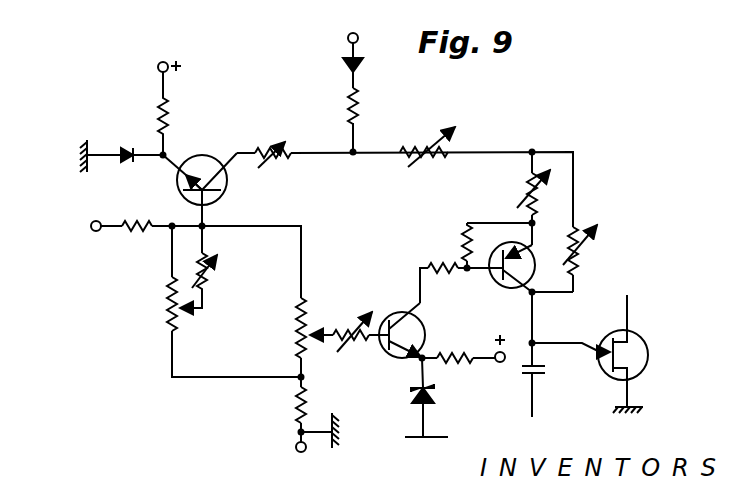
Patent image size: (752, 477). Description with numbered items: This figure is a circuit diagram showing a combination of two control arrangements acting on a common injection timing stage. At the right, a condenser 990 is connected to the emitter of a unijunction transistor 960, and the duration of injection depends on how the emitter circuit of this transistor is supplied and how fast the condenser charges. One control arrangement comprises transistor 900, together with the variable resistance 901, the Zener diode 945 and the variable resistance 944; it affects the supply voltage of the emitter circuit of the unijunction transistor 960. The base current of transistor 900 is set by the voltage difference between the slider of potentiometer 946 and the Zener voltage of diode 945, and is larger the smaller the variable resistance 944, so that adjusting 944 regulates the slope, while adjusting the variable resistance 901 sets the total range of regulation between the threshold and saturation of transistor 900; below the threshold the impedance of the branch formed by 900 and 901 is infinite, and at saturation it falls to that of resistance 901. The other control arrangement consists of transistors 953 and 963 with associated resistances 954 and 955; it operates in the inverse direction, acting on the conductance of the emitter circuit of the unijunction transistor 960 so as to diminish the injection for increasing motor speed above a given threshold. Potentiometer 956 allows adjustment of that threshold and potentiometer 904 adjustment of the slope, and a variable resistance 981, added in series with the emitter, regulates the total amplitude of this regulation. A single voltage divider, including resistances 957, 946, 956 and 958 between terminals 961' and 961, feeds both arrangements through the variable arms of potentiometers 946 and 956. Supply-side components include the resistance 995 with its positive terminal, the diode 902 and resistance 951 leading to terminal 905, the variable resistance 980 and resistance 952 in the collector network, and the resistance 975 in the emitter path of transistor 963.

The transistor 900 is at (228, 190).
The variable resistance 901 is at (273, 148).
The diode 902 is at (344, 65).
The potentiometer 904 is at (346, 329).
The terminal 905 is at (373, 42).
The variable resistance 944 is at (207, 290).
The diode 945 is at (128, 147).
The potentiometer 946 is at (166, 305).
The resistor 951 is at (350, 106).
The variable resistor 952 is at (584, 258).
The transistor 953 is at (510, 279).
The resistor 954 is at (432, 265).
The transistor 955 is at (462, 236).
The potentiometer 956 is at (294, 336).
The resistor 957 is at (139, 233).
The resistor 958 is at (296, 408).
The unijunction transistor 960 is at (641, 338).
The terminal 961 is at (298, 459).
The terminal 961' is at (88, 225).
The transistor 963 is at (441, 321).
The resistor 975 is at (466, 361).
The variable resistor 980 is at (425, 148).
The variable resistance 981 is at (526, 190).
The condenser 990 is at (546, 376).
The resistor 995 is at (170, 118).